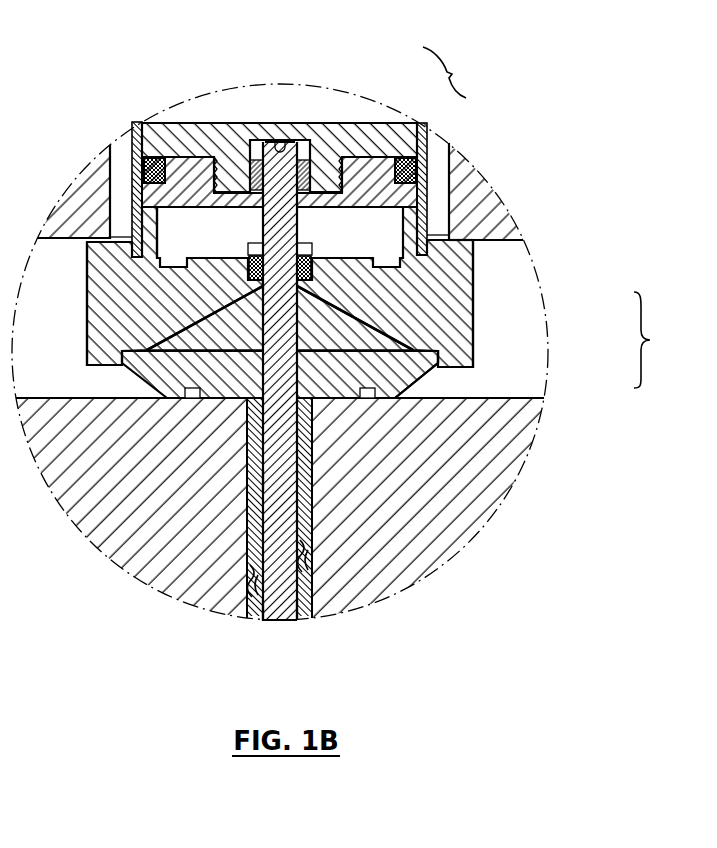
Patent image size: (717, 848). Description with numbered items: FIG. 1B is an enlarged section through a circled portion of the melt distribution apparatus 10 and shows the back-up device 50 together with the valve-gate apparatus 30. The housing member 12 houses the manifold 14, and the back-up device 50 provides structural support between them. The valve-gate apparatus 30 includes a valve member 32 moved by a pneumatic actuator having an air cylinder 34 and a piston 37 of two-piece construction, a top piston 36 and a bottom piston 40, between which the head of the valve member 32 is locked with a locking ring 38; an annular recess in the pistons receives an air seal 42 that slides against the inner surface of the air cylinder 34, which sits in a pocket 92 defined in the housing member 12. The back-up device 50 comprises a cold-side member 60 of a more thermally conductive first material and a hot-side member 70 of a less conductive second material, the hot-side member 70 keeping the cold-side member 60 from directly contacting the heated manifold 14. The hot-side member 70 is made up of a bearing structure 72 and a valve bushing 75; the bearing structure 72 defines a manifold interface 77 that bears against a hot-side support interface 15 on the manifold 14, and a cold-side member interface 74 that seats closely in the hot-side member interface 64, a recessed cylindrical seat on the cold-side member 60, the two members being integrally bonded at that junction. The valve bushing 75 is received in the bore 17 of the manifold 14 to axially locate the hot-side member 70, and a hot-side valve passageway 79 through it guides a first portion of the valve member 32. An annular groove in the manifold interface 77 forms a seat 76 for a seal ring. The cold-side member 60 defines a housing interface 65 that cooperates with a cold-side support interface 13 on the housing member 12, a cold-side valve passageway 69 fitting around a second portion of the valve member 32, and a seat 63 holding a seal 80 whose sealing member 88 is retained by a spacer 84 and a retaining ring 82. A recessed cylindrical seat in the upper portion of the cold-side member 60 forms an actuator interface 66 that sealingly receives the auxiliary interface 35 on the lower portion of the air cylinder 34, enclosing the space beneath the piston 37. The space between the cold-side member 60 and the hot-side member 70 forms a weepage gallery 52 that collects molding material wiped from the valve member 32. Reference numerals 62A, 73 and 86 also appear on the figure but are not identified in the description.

The melt distribution apparatus 10 is at (527, 570).
The housing member 12 is at (50, 208).
The cold-side support interface 13 is at (460, 262).
The manifold 14 is at (154, 585).
The hot-side support interface 15 is at (256, 386).
The bore 17 is at (258, 615).
The valve-gate apparatus 30 is at (275, 98).
The valve member 32 is at (287, 612).
The air cylinder 34 is at (138, 122).
The auxiliary interface 35 is at (126, 255).
The top piston 36 is at (340, 136).
The piston 37 is at (454, 71).
The locking ring 38 is at (305, 158).
The bottom piston 40 is at (380, 163).
The air seal 42 is at (146, 170).
The back-up device 50 is at (658, 340).
The weepage gallery 52 is at (365, 341).
The cold-side member 60 is at (508, 310).
The wedge 62A is at (183, 343).
The seat 63 is at (305, 287).
The hot-side member interface 64 is at (133, 354).
The housing interface 65 is at (462, 232).
The actuator interface 66 is at (150, 250).
The cold-side valve passageway 69 is at (267, 283).
The hot-side member 70 is at (460, 383).
The bearing structure 72 is at (325, 388).
The clamp ring foot 73 is at (420, 394).
The cold-side member interface 74 is at (450, 356).
The valve bushing 75 is at (308, 508).
The seat 76 is at (372, 397).
The manifold interface 77 is at (247, 408).
The hot-side valve passageway 79 is at (270, 481).
The seal 80 is at (310, 247).
The retaining ring 82 is at (254, 247).
The spacer 84 is at (248, 253).
The right seal 86 is at (305, 261).
The sealing member 88 is at (360, 263).
The pocket 92 is at (118, 142).